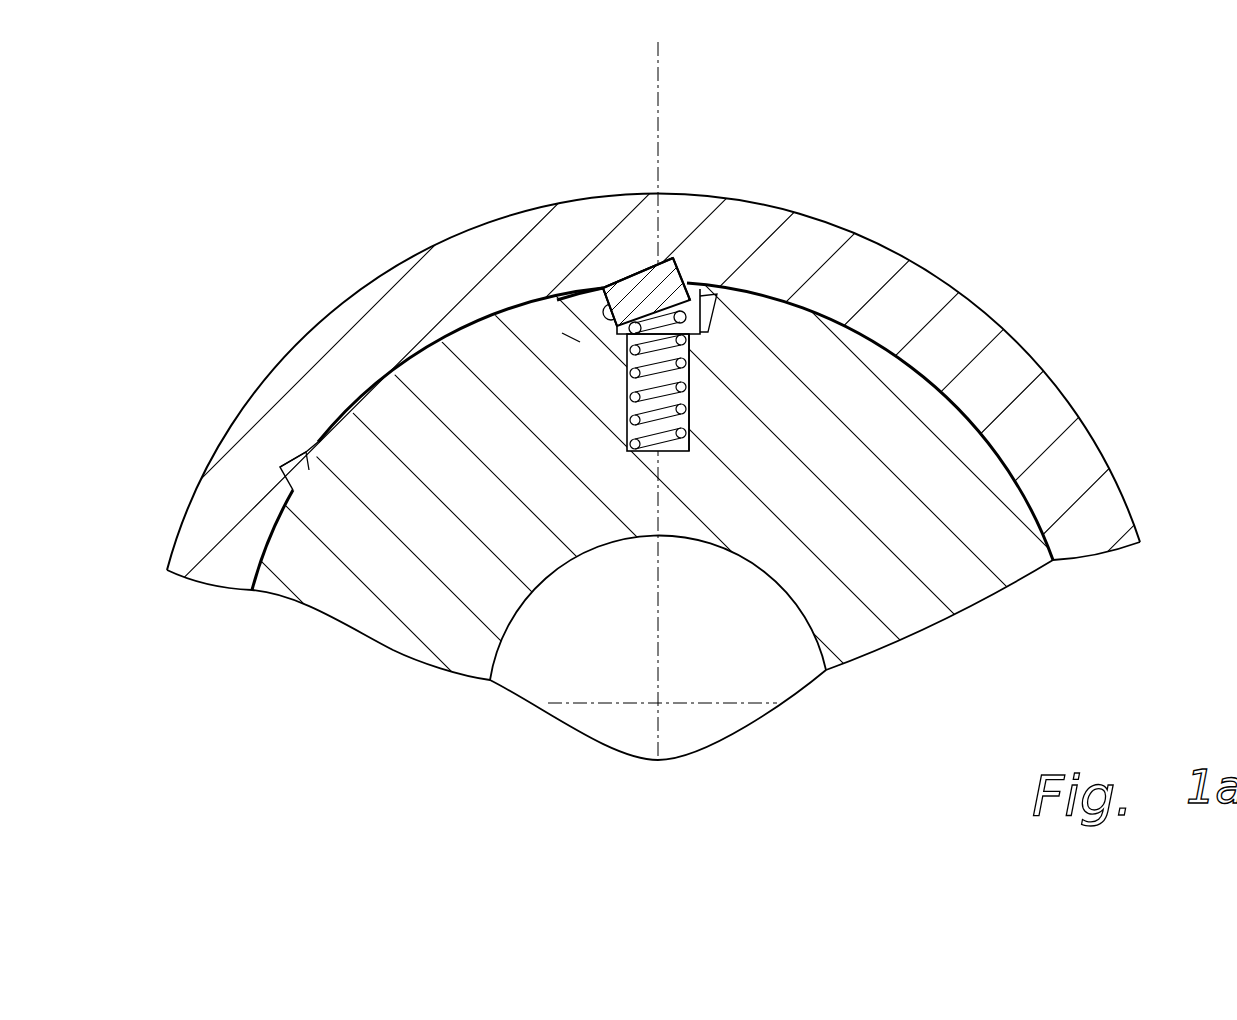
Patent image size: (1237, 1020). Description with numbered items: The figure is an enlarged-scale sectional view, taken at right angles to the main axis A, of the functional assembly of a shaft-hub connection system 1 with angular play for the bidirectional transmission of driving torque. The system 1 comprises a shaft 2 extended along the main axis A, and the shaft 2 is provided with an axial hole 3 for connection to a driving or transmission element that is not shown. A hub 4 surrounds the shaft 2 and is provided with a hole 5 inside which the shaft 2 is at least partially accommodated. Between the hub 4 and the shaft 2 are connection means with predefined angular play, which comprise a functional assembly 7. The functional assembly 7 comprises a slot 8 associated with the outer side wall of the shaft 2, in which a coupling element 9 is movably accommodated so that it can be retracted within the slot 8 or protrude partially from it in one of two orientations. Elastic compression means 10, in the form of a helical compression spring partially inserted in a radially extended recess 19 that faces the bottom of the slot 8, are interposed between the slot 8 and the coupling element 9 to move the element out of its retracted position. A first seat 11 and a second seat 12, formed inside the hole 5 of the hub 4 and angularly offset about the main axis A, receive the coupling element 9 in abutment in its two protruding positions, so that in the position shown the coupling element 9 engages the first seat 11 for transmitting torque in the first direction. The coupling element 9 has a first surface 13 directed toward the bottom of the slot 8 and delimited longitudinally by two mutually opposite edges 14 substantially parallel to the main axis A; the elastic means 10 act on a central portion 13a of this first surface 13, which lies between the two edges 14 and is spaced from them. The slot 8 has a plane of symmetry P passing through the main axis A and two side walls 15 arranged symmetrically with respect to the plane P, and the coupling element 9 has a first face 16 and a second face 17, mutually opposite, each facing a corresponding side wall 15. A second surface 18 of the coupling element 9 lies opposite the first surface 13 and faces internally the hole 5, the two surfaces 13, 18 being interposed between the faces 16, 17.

The shaft-hub connection system 1 is at (1138, 243).
The shaft 2 is at (905, 400).
The axial hole 3 is at (540, 577).
The hub 4 is at (1092, 437).
The hole 5 is at (410, 377).
The functional assembly 7 is at (290, 437).
The slot 8 is at (720, 302).
The coupling element 9 is at (675, 253).
The elastic compression means 10 is at (690, 397).
The first seat 11 is at (625, 273).
The second seat 12 is at (323, 453).
The first surface 13 is at (667, 320).
The central portion 13a is at (692, 345).
The edges 14 is at (716, 290).
The side walls 15 is at (718, 318).
The first face 16 is at (557, 300).
The second face 17 is at (676, 256).
The second surface 18 is at (628, 273).
The recess 19 is at (677, 452).
The plane of symmetry P is at (658, 66).
The main axis A is at (655, 705).